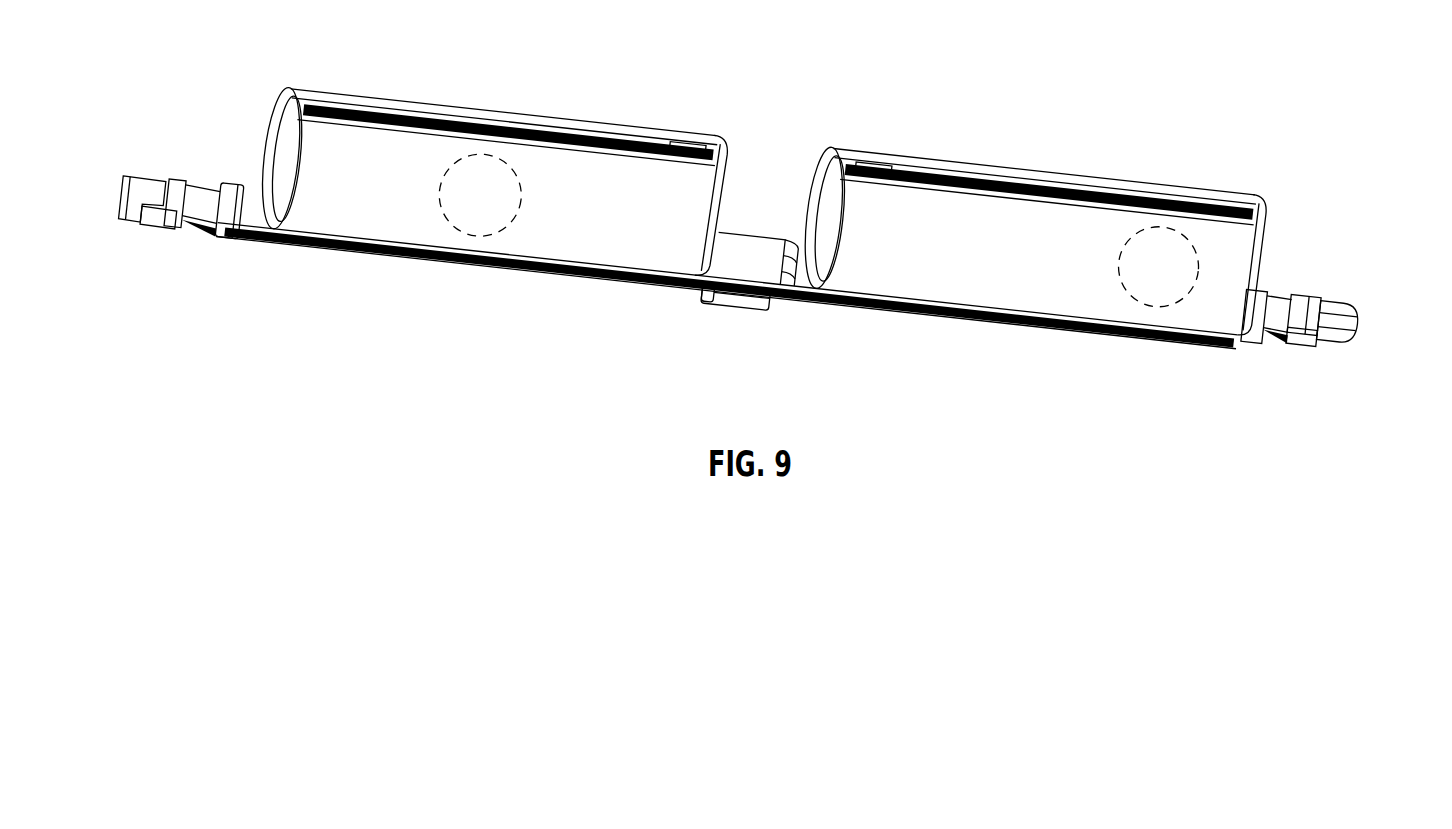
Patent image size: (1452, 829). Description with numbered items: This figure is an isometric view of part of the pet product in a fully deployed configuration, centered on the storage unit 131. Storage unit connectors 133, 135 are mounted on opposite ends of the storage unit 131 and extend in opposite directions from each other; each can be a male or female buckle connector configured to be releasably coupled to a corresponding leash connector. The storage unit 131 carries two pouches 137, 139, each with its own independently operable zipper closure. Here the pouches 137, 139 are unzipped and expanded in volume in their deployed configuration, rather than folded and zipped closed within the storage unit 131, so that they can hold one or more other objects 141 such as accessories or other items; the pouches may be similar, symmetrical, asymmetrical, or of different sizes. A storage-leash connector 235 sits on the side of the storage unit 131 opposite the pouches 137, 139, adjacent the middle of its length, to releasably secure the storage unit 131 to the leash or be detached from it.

The storage unit 131 is at (1285, 47).
The storage unit connector 133 is at (1358, 344).
The storage unit connector 135 is at (147, 185).
The pouch 137 is at (1267, 233).
The pouch 139 is at (277, 130).
The other objects 141 is at (482, 157).
The storage-leash connector 235 is at (770, 297).